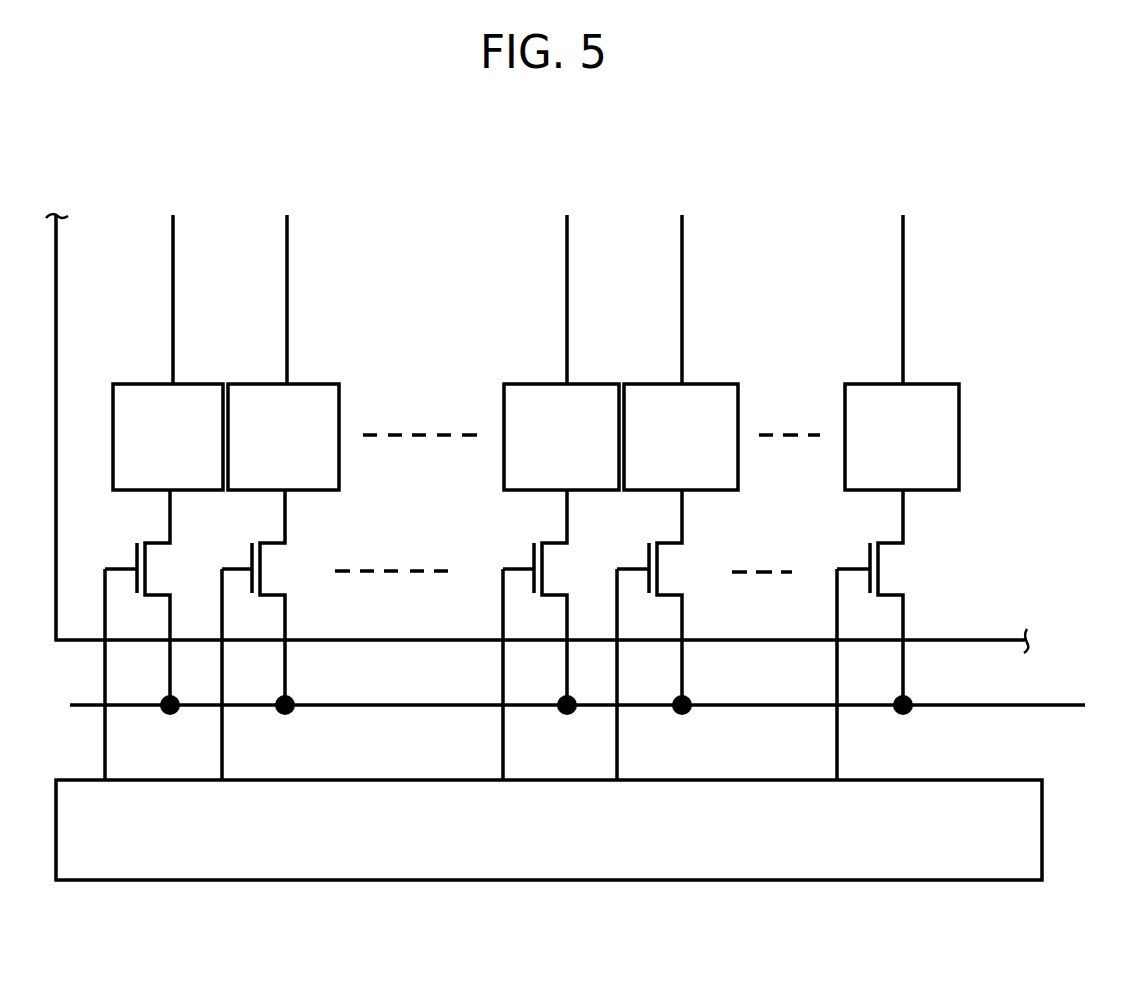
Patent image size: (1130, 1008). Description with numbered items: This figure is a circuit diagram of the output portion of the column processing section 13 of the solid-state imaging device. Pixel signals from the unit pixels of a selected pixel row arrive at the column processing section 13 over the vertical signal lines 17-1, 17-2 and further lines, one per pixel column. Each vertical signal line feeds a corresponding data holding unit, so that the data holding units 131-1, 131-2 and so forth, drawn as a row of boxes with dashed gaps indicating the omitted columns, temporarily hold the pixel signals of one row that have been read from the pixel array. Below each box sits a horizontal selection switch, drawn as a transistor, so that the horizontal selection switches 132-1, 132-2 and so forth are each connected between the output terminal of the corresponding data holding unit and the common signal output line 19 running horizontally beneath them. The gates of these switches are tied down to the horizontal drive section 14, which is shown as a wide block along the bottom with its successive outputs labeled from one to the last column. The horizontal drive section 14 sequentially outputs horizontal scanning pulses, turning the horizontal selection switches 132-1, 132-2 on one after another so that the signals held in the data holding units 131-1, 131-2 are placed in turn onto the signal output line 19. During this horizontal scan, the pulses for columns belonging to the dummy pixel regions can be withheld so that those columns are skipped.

The column processing section 13 is at (737, 138).
The horizontal drive section 14 is at (1043, 835).
The vertical signal line 17-1 is at (174, 270).
The vertical signal line 17-2 is at (288, 270).
The data holding unit 131-1 is at (198, 383).
The data holding unit 131-2 is at (318, 383).
The horizontal selection switch 132-1 is at (183, 559).
The horizontal selection switch 132-2 is at (301, 559).
The signal output line 19 is at (1060, 703).